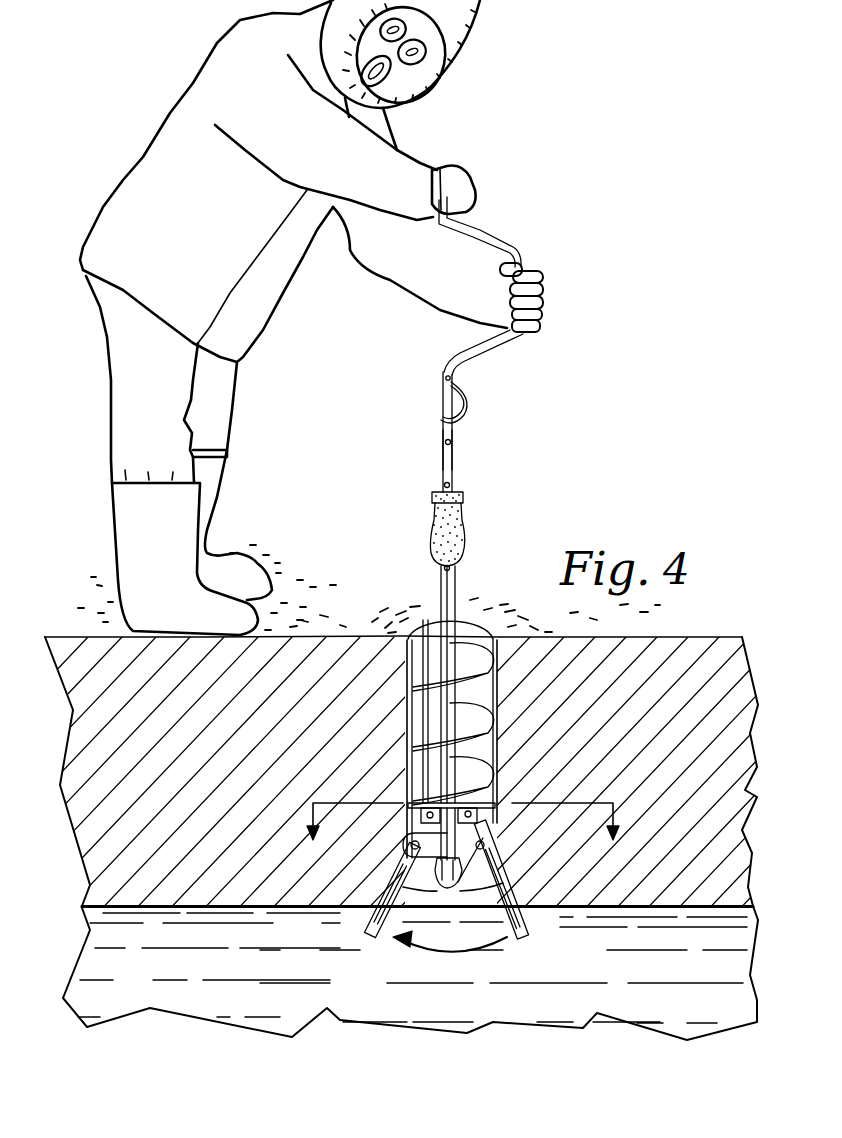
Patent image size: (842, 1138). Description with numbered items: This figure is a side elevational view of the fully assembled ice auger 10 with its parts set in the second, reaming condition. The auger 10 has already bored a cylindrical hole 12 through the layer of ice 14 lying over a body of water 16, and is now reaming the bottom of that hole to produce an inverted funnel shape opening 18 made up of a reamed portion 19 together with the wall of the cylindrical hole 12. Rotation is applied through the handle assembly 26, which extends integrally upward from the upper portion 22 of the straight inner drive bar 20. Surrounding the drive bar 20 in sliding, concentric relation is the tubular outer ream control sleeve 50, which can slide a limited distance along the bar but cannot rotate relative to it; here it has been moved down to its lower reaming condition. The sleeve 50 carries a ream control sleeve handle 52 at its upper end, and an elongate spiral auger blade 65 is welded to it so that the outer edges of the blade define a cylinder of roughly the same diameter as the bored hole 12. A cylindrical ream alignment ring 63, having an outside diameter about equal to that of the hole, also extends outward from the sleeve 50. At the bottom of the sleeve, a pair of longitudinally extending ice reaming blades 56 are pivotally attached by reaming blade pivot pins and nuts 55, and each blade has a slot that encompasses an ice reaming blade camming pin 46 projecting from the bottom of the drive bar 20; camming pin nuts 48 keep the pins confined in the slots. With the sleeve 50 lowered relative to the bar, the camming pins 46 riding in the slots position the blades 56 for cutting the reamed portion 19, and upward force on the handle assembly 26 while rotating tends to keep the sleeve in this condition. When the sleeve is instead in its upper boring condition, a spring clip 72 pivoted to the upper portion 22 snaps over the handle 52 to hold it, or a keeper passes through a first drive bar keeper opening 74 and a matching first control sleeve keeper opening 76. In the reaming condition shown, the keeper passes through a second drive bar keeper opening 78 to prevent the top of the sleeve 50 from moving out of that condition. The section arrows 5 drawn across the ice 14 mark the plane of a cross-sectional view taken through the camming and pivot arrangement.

The section line 5- 5 is at (461, 843).
The ice auger 10 is at (470, 511).
The cylindrical hole 12 is at (492, 623).
The layer of ice 14 is at (663, 650).
The body of water 16 is at (517, 1005).
The inverted funnel shape opening 18 is at (397, 920).
The reamed portion 19 is at (478, 873).
The straight inner drive bar 20 is at (453, 473).
The upper portion 22 is at (447, 398).
The handle assembly 26 is at (517, 240).
The ice reaming blade camming pins 46 is at (412, 843).
The camming pin nuts 48 is at (485, 841).
The tubular outer ream control sleeve 50 is at (450, 585).
The ream control sleeve handle 52 is at (438, 538).
The reaming blade pivot pins and nuts 55 is at (471, 806).
The ice reaming blades 56 is at (360, 926).
The cylindrical ream alignment ring 63 is at (432, 800).
The elongate spiral auger blade 65 is at (463, 652).
The spring clip 72 is at (466, 398).
The first drive bar keeper opening 74 is at (454, 443).
The first control sleeve keeper opening 76 is at (442, 570).
The second drive bar keeper opening 78 is at (445, 485).